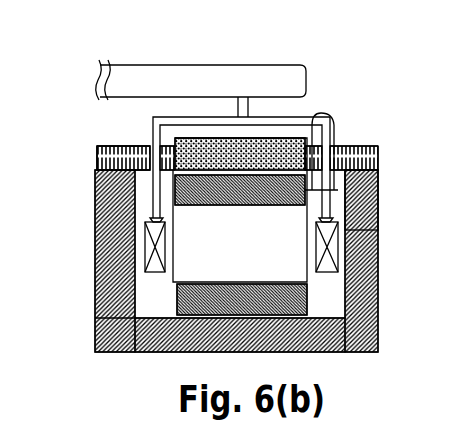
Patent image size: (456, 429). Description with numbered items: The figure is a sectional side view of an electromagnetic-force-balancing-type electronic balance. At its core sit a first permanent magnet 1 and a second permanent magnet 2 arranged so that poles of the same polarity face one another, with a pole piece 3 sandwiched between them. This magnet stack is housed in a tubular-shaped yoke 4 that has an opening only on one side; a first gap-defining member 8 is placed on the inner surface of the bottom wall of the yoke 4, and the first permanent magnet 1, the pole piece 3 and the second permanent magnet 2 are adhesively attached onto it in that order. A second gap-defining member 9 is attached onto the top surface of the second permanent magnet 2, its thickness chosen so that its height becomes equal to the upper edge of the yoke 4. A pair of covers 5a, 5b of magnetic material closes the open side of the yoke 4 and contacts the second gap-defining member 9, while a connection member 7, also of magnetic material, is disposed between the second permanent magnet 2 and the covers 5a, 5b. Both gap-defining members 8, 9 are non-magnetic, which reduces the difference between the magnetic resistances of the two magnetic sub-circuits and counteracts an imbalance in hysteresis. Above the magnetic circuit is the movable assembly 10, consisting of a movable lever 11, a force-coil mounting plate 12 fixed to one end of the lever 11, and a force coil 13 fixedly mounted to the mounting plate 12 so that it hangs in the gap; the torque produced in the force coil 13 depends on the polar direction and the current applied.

The first permanent magnet 1 is at (352, 296).
The second permanent magnet 2 is at (170, 192).
The pole piece 3 is at (317, 216).
The yoke 4 is at (28, 342).
The cover 5a is at (357, 147).
The cover 5b is at (76, 182).
The connection member 7 is at (338, 141).
The first gap-defining member 8 is at (340, 291).
The second gap-defining member 9 is at (352, 184).
The movable assembly 10 is at (328, 62).
The movable lever 11 is at (85, 100).
The force-coil mounting plate 12 is at (150, 128).
The force coil 13 is at (150, 250).